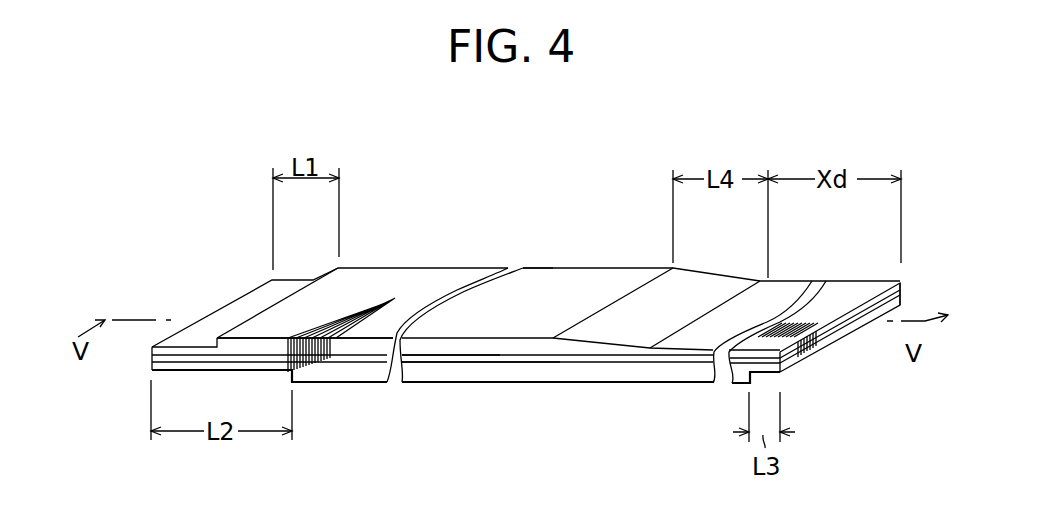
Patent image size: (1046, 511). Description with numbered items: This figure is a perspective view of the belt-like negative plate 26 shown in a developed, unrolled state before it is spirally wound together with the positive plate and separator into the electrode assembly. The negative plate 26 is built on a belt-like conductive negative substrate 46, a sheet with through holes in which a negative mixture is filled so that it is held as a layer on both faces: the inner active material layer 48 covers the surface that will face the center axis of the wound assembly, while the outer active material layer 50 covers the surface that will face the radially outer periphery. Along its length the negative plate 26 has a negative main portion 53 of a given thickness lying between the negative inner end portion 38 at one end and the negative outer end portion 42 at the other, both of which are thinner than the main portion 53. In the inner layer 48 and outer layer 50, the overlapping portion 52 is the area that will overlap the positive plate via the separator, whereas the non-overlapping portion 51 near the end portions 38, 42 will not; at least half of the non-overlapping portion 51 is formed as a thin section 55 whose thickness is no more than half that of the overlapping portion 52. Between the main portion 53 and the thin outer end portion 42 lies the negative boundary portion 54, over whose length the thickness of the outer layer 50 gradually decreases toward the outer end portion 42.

The negative plate 26 is at (795, 145).
The negative inner end portion 38 is at (260, 292).
The negative outer end portion 42 is at (867, 278).
The negative substrate 46 is at (543, 360).
The inner active material layer 48 is at (605, 370).
The outer active material layer 50 is at (495, 347).
The non-overlapping portion 51 is at (200, 328).
The overlapping portion 52 is at (455, 318).
The negative main portion 53 is at (537, 305).
The negative boundary portion 54 is at (685, 268).
The thin section 55 is at (220, 323).